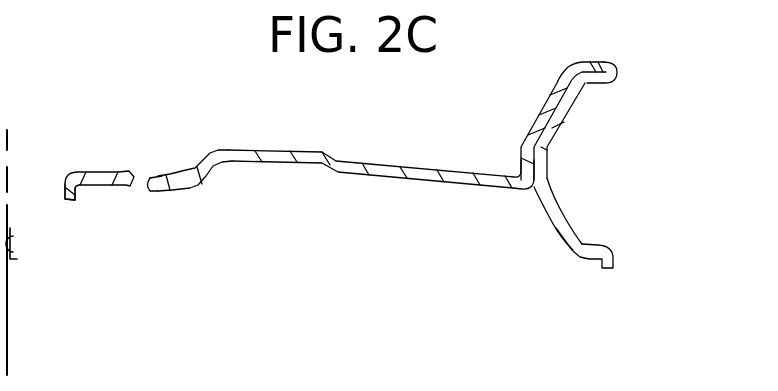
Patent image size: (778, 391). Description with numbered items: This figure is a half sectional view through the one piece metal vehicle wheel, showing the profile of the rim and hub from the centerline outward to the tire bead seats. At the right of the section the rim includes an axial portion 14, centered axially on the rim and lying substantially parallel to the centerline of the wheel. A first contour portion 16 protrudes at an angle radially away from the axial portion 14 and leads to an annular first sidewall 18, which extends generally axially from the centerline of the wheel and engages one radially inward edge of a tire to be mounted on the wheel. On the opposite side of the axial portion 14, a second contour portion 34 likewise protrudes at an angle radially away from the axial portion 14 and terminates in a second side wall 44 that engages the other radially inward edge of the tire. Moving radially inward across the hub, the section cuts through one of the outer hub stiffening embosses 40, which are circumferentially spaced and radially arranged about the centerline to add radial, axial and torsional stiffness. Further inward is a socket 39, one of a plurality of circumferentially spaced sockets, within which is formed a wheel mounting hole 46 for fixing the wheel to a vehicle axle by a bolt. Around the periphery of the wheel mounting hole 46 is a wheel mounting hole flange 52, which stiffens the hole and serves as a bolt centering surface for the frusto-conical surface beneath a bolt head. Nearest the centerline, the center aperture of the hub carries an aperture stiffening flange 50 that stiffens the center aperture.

The axial portion 14 is at (545, 162).
The first contour portion 16 is at (562, 217).
The first sidewall 18 is at (587, 262).
The second contour portion 34 is at (563, 113).
The socket 39 is at (189, 170).
The outer hub stiffening emboss 40 is at (403, 168).
The second side wall 44 is at (617, 63).
The wheel mounting hole 46 is at (150, 192).
The aperture stiffening flange 50 is at (73, 200).
The wheel mounting hole flange 52 is at (127, 177).